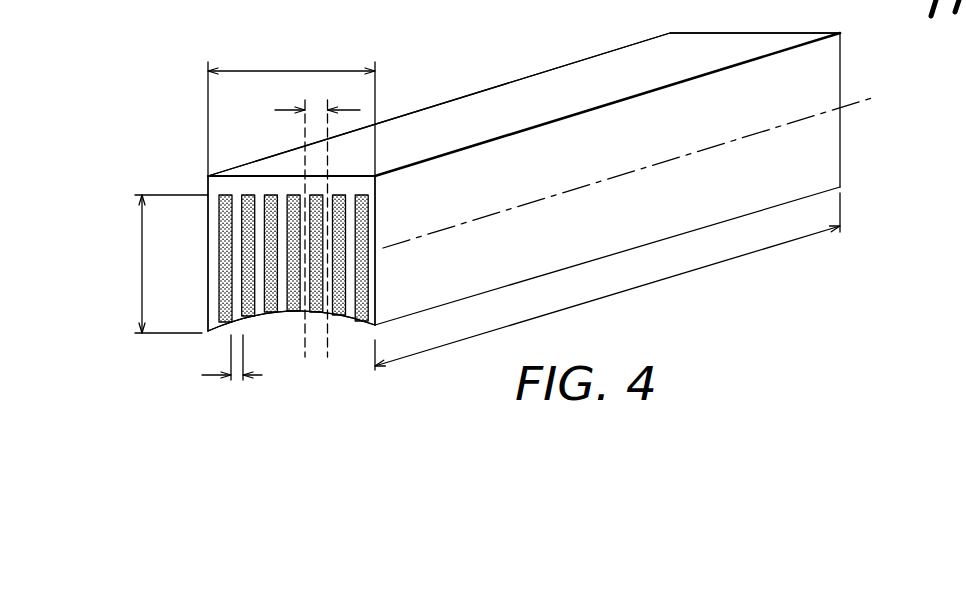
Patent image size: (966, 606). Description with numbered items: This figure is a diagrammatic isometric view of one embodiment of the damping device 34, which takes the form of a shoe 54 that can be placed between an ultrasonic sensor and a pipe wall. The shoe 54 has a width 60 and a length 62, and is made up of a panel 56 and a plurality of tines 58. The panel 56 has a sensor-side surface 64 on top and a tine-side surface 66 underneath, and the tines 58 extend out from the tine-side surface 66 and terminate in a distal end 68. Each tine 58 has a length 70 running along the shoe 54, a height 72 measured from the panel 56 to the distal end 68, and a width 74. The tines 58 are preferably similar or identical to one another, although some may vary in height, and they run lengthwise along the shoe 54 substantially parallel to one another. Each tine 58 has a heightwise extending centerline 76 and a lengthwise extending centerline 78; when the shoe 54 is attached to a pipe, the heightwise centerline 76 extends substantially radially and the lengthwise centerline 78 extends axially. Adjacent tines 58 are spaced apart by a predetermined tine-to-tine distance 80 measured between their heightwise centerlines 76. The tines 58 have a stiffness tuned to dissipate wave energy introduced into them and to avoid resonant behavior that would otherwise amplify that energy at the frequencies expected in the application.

The damping device 34 is at (550, 23).
The shoe 54 is at (484, 79).
The panel 56 is at (224, 182).
The tines 58 is at (370, 312).
The width 60 is at (262, 71).
The length 62 is at (740, 256).
The sensor-side surface 64 is at (343, 176).
The tine-side surface 66 is at (226, 217).
The distal end 68 is at (208, 331).
The tine length 70 is at (740, 256).
The tine height 72 is at (141, 275).
The tine width 74 is at (222, 374).
The heightwise extending centerline 76 is at (316, 128).
The lengthwise extending centerline 78 is at (858, 103).
The tine-to-tine distance 80 is at (298, 110).